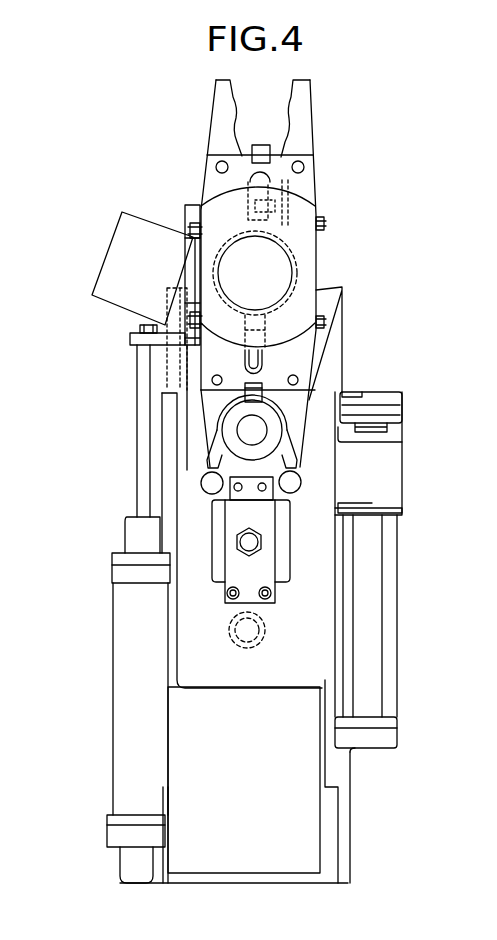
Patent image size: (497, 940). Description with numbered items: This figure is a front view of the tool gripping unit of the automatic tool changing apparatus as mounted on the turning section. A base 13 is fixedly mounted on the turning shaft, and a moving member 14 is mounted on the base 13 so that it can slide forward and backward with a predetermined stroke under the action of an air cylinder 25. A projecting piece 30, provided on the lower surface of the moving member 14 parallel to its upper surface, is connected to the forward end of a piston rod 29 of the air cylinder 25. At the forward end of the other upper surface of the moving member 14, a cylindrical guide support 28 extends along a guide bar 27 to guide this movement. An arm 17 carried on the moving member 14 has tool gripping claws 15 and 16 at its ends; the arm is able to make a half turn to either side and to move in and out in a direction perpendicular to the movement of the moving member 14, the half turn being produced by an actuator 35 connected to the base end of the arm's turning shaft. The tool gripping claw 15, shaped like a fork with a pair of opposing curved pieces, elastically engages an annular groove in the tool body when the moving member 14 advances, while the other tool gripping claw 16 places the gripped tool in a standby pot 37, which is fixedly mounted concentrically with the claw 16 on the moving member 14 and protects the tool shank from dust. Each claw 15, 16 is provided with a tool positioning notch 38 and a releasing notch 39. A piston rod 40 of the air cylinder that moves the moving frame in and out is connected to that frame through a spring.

The base 13 is at (340, 835).
The moving member 14 is at (297, 662).
The tool gripping claw 15 is at (303, 106).
The tool gripping claw 16 is at (207, 418).
The arm 17 is at (303, 263).
The air cylinder 25 is at (120, 767).
The guide bar 27 is at (360, 612).
The cylindrical guide support 28 is at (373, 475).
The piston rod 29 is at (140, 465).
The projecting piece 30 is at (142, 340).
The actuator 35 is at (122, 285).
The standby pot 37 is at (343, 407).
The tool positioning notch 38 is at (270, 153).
The releasing notch 39 is at (265, 365).
The piston rod 40 is at (250, 543).